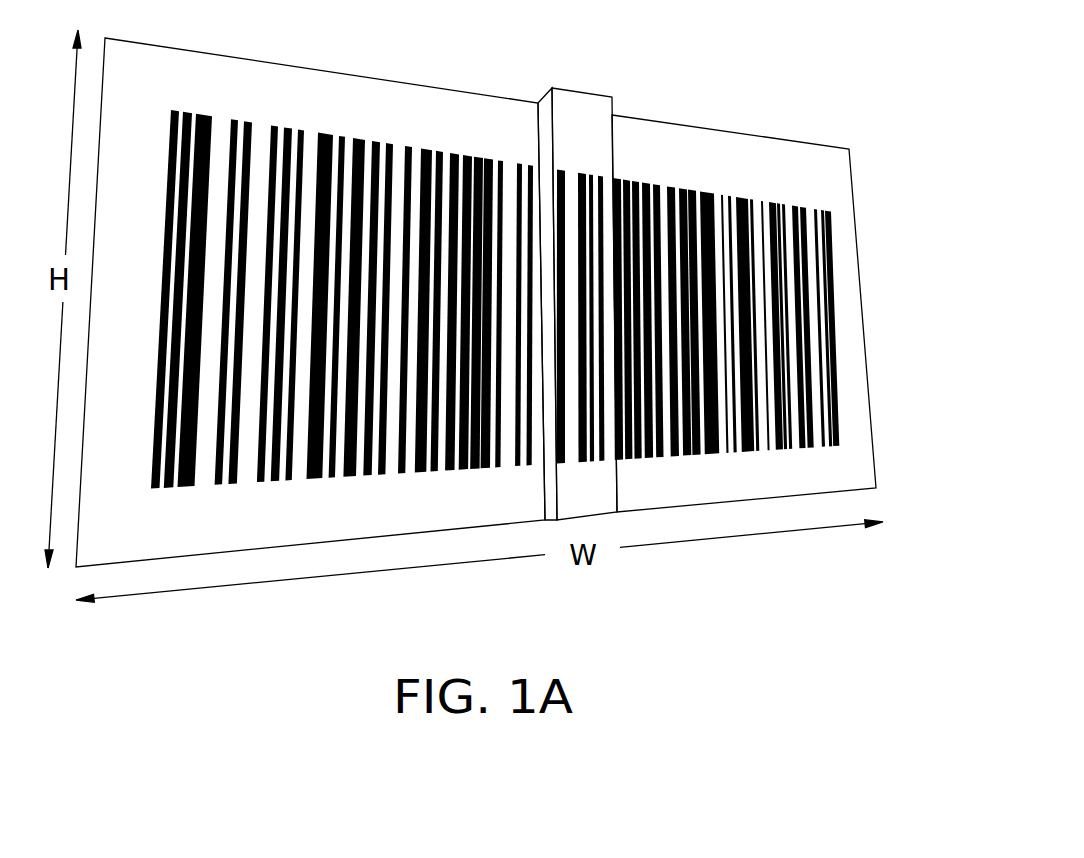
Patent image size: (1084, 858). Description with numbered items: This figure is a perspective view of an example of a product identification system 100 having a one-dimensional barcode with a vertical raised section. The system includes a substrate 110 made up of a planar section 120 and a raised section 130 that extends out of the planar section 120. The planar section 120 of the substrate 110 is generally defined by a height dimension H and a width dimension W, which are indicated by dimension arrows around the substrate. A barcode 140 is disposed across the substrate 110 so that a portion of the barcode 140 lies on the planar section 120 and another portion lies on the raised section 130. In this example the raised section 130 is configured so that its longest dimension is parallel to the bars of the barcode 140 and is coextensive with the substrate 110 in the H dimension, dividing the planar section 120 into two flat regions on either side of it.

The product identification system 100 is at (862, 110).
The substrate 110 is at (857, 250).
The planar section 120 is at (277, 83).
The raised section 130 is at (568, 107).
The barcode 140 is at (838, 353).